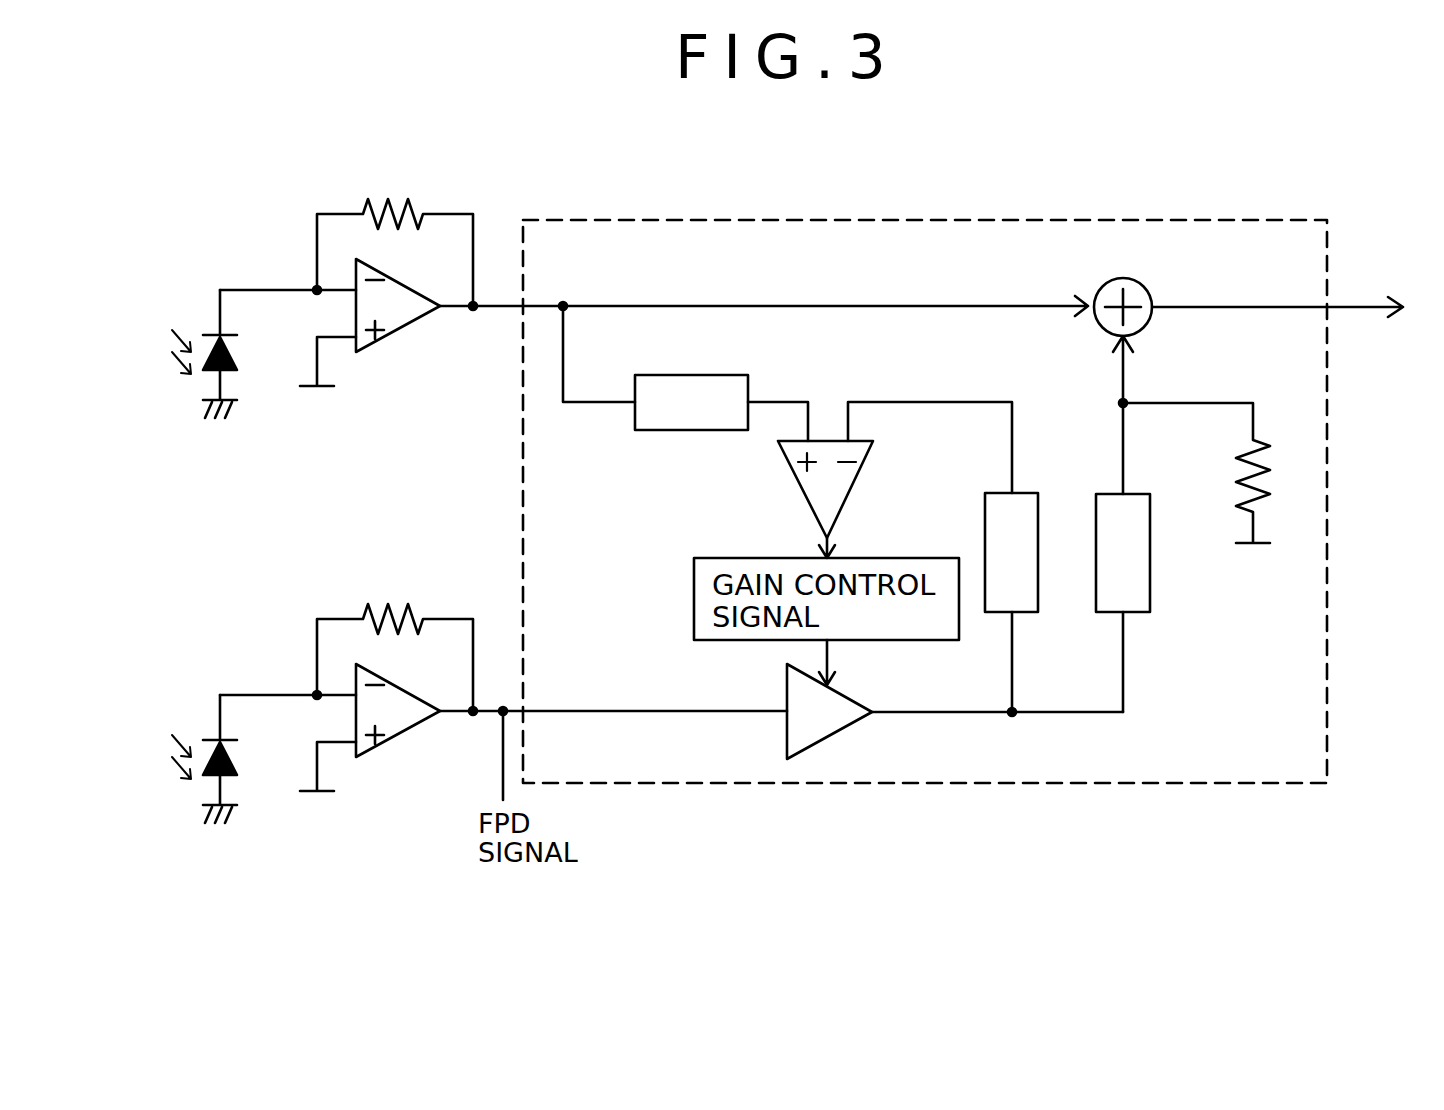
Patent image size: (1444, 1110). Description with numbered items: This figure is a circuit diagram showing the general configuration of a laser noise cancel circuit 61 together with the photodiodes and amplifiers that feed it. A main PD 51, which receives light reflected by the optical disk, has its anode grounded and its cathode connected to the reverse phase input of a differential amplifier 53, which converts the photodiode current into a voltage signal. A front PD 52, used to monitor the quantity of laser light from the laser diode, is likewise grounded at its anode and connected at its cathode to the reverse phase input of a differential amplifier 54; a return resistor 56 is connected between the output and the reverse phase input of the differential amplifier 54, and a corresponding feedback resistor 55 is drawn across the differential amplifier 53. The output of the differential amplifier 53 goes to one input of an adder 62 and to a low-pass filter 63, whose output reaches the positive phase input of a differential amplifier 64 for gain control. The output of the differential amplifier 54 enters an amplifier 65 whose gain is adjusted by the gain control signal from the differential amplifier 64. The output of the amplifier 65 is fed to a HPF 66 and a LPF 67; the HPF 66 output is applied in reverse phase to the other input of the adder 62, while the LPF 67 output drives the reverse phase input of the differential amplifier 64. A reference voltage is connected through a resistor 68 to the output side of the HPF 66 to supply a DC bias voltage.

The main PD 51 is at (182, 378).
The front PD 52 is at (182, 783).
The differential amplifier 53 is at (407, 330).
The differential amplifier 54 is at (407, 735).
The first feedback resistor 55 is at (400, 205).
The return resistor 56 is at (400, 610).
The laser noise cancel circuit 61 is at (1170, 220).
The adder 62 is at (1146, 285).
The low-pass filter 63 is at (690, 432).
The differential amplifier for gain control 64 is at (857, 485).
The amplifier 65 is at (840, 730).
The HPF 66 is at (1150, 614).
The LPF 67 is at (1022, 614).
The resistor 68 is at (1268, 455).